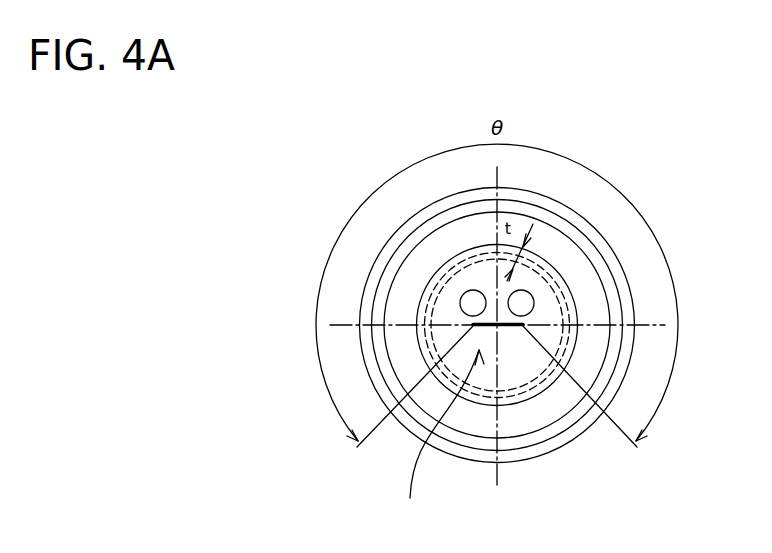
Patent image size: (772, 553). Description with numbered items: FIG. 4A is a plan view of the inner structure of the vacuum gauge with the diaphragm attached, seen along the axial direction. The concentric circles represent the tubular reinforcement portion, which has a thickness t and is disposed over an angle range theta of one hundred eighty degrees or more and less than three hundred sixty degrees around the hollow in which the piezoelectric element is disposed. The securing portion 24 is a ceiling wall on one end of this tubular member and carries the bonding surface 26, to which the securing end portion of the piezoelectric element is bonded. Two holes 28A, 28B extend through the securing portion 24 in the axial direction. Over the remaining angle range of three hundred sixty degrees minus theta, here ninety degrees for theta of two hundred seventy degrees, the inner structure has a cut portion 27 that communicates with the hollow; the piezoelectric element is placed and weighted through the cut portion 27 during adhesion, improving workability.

The securing portion 24 is at (548, 312).
The bonding surface 26 is at (508, 328).
The cut portion 27 is at (440, 439).
The hole 28A is at (465, 292).
The hole 28B is at (529, 292).